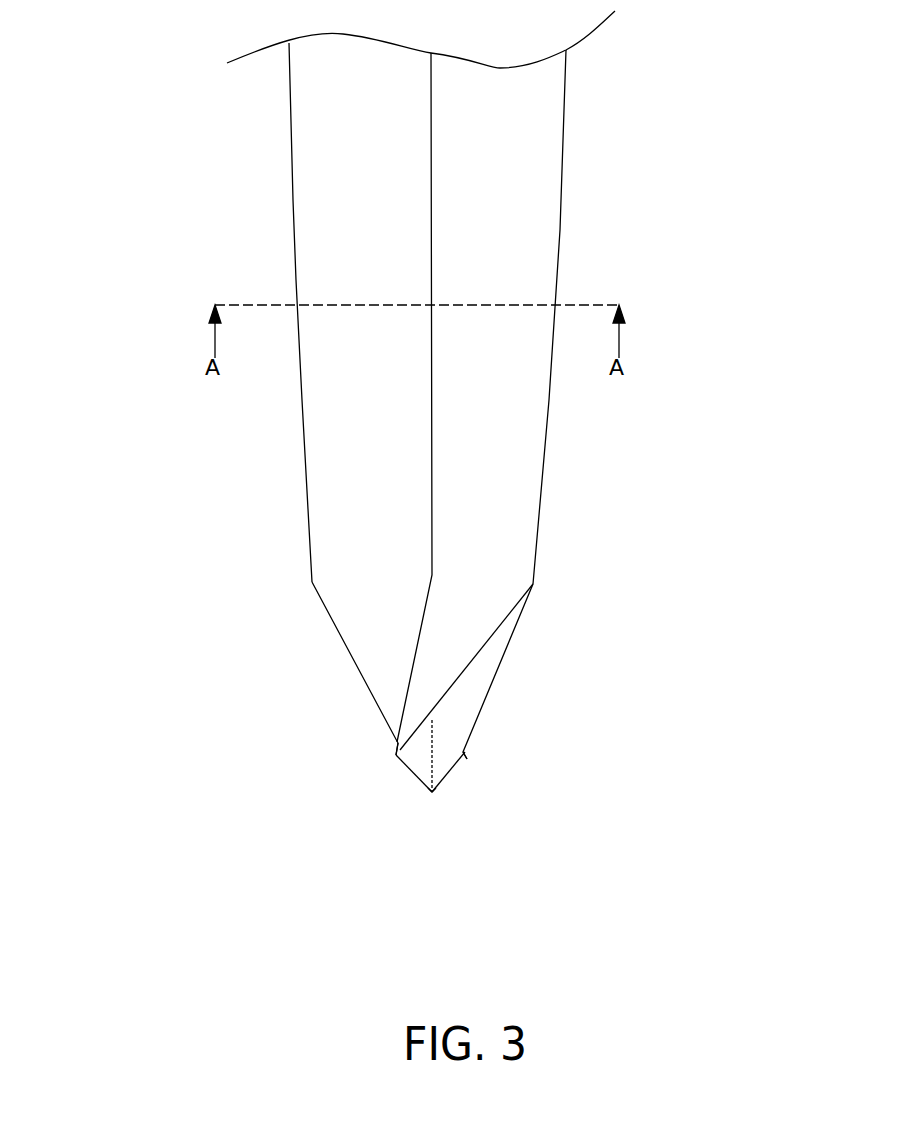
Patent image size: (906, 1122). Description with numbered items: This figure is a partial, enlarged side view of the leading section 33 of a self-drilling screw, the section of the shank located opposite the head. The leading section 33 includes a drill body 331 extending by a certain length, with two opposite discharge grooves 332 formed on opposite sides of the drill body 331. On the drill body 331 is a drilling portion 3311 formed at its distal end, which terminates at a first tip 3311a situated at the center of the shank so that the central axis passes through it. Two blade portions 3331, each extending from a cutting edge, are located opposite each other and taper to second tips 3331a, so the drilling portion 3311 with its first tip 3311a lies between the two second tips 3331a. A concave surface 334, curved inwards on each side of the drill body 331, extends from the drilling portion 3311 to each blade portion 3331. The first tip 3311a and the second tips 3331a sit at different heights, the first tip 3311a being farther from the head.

The leading section 33 is at (263, 167).
The drill body 331 is at (480, 463).
The discharge groove 332 is at (390, 463).
The concave surface 334 is at (490, 659).
The blade portion 3331 is at (398, 725).
The second tip 3331a is at (397, 757).
The drilling portion 3311 is at (413, 770).
The first tip 3311a is at (432, 792).